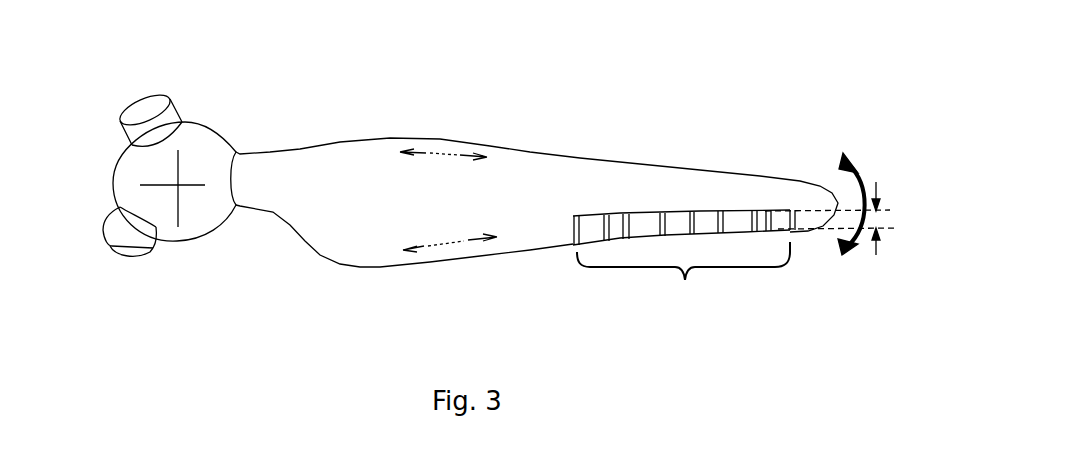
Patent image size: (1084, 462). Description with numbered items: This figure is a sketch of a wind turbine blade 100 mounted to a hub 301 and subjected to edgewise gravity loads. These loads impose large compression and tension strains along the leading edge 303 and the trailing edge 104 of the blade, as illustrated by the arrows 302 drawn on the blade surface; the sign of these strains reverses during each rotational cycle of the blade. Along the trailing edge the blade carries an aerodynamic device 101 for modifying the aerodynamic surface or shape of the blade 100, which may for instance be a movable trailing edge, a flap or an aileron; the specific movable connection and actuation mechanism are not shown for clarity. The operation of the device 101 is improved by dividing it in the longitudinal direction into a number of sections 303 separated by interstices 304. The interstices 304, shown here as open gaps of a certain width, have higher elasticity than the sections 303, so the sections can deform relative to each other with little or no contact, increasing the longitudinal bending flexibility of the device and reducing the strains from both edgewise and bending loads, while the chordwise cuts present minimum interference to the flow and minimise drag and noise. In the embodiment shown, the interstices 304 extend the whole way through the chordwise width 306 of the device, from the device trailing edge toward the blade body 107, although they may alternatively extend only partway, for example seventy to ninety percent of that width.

The wind turbine blade 100 is at (537, 172).
The blade body 107 is at (608, 170).
The aerodynamic device 101 is at (687, 285).
The trailing edge 104 is at (525, 247).
The hub 301 is at (198, 142).
The arrows 302 is at (436, 152).
The sections 303 is at (535, 152).
The interstices 304 is at (657, 232).
The chordwise width 306 is at (845, 204).